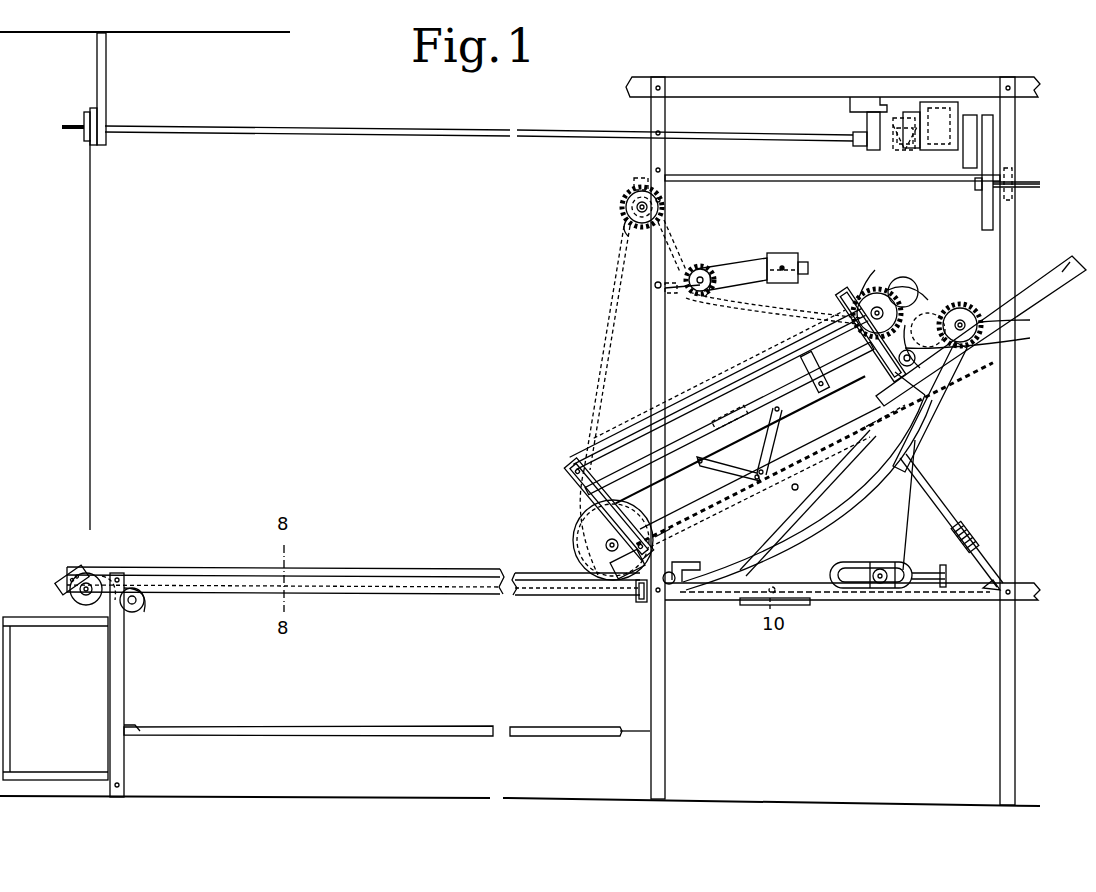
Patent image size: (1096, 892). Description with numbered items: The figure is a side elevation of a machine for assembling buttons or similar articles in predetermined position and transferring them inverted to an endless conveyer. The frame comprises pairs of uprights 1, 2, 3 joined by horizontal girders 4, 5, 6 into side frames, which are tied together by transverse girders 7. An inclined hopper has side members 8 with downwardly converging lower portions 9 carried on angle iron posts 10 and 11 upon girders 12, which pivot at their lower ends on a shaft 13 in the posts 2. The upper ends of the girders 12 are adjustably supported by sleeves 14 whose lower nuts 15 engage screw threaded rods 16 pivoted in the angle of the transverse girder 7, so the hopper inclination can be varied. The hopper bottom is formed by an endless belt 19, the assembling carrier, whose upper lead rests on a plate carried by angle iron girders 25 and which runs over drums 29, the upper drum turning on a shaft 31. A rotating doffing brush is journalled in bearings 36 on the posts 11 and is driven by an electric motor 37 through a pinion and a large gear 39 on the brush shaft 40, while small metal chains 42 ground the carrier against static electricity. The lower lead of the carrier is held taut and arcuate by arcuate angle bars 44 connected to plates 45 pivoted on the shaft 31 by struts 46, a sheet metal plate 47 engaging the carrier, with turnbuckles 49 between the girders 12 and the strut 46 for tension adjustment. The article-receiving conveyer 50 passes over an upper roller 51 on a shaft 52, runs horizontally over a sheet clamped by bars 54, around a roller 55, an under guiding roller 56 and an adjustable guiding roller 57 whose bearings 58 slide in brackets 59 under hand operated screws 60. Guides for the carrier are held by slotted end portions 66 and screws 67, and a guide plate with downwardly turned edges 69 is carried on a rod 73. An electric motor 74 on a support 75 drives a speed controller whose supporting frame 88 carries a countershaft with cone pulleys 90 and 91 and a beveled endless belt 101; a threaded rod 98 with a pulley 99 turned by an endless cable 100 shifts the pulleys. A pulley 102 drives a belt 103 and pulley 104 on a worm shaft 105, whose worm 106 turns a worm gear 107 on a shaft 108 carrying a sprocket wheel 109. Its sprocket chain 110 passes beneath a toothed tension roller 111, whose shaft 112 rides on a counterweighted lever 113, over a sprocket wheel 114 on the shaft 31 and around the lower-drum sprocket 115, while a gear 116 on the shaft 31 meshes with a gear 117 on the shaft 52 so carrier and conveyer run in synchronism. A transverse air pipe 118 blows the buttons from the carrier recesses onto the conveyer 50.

The upright 1 is at (1016, 698).
The upright 2 is at (666, 690).
The upright 3 is at (125, 673).
The horizontal girder 4 is at (562, 596).
The horizontal girder 5 is at (430, 727).
The horizontal girder 6 is at (848, 60).
The transverse girder 7 is at (1000, 586).
The side member 8 is at (708, 385).
The downwardly converging lower portion 9 is at (650, 580).
The post 10 is at (595, 465).
The post 11 is at (850, 292).
The girder 12 is at (800, 440).
The shaft 13 is at (667, 518).
The sleeve 14 is at (917, 453).
The nut 15 is at (968, 528).
The screw threaded rod 16 is at (975, 548).
The endless belt 19 is at (740, 425).
The angle iron girder 25 is at (720, 448).
The roller or drum 29 is at (600, 540).
The shaft 31 is at (915, 360).
The bearing 36 is at (880, 290).
The electric motor 37 is at (915, 280).
The gear 39 is at (868, 270).
The shaft 40 is at (838, 313).
The metal chain 42 is at (928, 313).
The arcuate angle bar 44 is at (852, 512).
The plate 45 is at (930, 390).
The strut 46 is at (790, 485).
The sheet metal plate 47 is at (870, 500).
The turnbuckle 49 is at (745, 500).
The article-receiving conveyer 50 is at (950, 425).
The upper roller 51 is at (963, 322).
The shaft 52 is at (925, 315).
The bar 54 is at (330, 567).
The roller 55 is at (70, 598).
The under guiding roller 56 is at (145, 600).
The adjustable guiding roller 57 is at (885, 566).
The bearing 58 is at (885, 585).
The bracket 59 is at (855, 562).
The hand operated screw 60 is at (928, 573).
The downwardly turned end portion 66 is at (640, 600).
The screw 67 is at (639, 592).
The downwardly turned edge 69 is at (800, 605).
The rod 73 is at (772, 598).
The electric motor 74 is at (918, 150).
The support 75 is at (937, 102).
The supporting frame 88 is at (885, 137).
The cone pulley 90 is at (912, 150).
The cone pulley 91 is at (900, 150).
The rod 98 is at (338, 137).
The pulley 99 is at (83, 140).
The endless cable 100 is at (91, 420).
The endless belt 101 is at (906, 150).
The pulley 102 is at (977, 125).
The belt 103 is at (993, 155).
The pulley 104 is at (982, 205).
The worm shaft 105 is at (770, 180).
The worm 106 is at (636, 178).
The worm gear 107 is at (633, 210).
The shaft 108 is at (628, 225).
The sprocket wheel 109 is at (626, 200).
The sprocket chain 110 is at (678, 262).
The toothed tension roller 111 is at (705, 270).
The shaft 112 is at (682, 299).
The counterweighted lever 113 is at (725, 282).
The sprocket wheel 114 is at (875, 430).
The sprocket 115 is at (576, 548).
The gear 116 is at (982, 337).
The gear 117 is at (1020, 319).
The pipe 118 is at (672, 584).